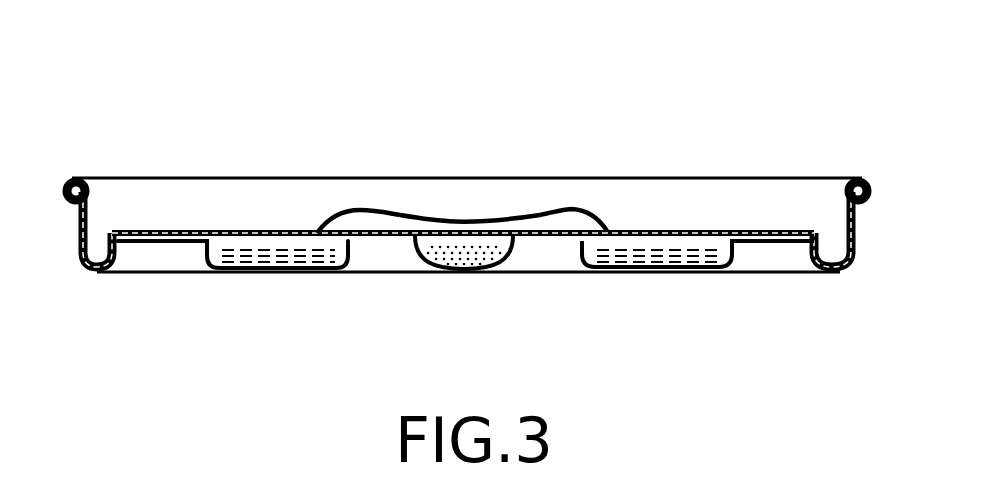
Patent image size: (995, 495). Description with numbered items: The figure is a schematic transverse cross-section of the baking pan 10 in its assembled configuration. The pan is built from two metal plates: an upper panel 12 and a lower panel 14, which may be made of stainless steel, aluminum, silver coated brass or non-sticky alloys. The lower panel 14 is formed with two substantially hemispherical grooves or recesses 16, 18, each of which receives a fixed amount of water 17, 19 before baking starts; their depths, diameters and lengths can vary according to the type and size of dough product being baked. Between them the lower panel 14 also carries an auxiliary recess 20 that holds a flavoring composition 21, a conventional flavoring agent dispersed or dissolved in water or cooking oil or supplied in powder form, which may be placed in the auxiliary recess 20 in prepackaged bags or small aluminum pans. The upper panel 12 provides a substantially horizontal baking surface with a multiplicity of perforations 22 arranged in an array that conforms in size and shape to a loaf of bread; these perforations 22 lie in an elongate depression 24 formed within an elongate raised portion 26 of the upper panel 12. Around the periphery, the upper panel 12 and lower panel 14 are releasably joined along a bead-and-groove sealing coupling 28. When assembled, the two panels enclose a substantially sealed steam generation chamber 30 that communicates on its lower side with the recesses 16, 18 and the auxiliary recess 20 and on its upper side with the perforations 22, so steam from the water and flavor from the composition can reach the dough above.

The baking pan 10 is at (108, 148).
The upper panel 12 is at (637, 178).
The lower panel 14 is at (755, 272).
The recess 16 is at (230, 238).
The water 17 is at (268, 250).
The recess 18 is at (716, 257).
The water 19 is at (660, 240).
The auxiliary recess 20 is at (463, 273).
The flavoring composition 21 is at (495, 273).
The perforations 22 is at (495, 220).
The elongate depression 24 is at (425, 212).
The elongate raised portion 26 is at (360, 207).
The bead-and-groove sealing coupling 28 is at (866, 178).
The steam generation chamber 30 is at (570, 225).